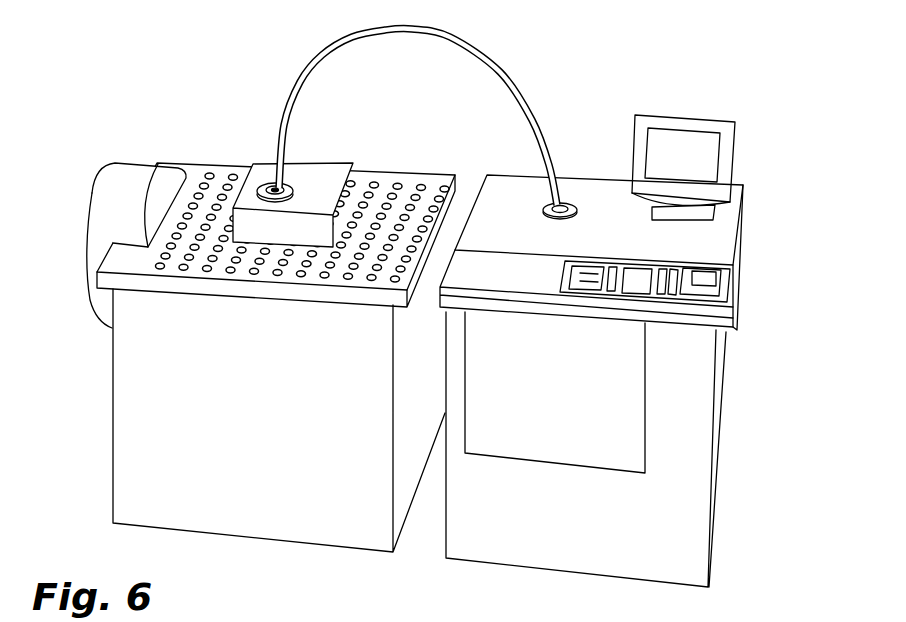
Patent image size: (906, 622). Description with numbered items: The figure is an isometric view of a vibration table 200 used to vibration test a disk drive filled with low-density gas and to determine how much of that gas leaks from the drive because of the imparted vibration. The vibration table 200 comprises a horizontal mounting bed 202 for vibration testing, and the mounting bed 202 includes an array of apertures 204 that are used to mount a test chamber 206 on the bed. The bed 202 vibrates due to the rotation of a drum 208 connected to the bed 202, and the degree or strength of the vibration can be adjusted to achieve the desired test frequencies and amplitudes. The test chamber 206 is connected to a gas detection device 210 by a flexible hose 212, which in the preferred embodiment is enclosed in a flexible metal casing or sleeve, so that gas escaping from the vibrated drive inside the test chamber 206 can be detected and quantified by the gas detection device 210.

The vibration table 200 is at (443, 300).
The horizontal mounting bed 202 is at (130, 285).
The array of apertures 204 is at (442, 187).
The test chamber 206 is at (267, 167).
The drum 208 is at (117, 175).
The gas detection device 210 is at (708, 248).
The flexible hose 212 is at (515, 80).